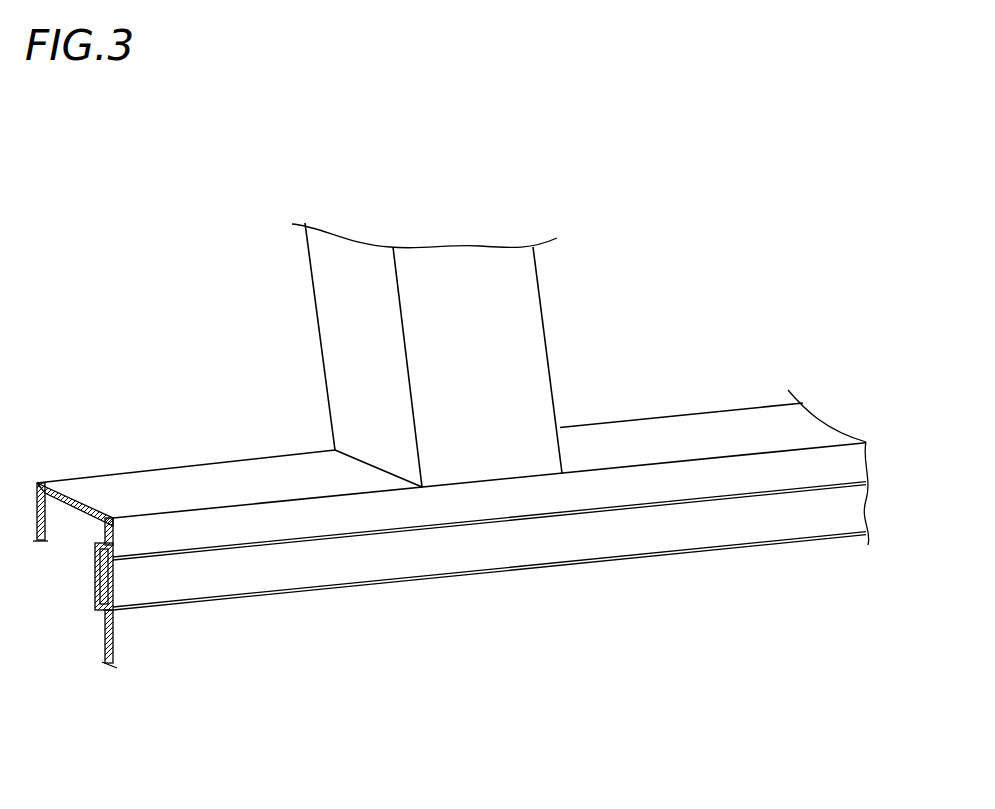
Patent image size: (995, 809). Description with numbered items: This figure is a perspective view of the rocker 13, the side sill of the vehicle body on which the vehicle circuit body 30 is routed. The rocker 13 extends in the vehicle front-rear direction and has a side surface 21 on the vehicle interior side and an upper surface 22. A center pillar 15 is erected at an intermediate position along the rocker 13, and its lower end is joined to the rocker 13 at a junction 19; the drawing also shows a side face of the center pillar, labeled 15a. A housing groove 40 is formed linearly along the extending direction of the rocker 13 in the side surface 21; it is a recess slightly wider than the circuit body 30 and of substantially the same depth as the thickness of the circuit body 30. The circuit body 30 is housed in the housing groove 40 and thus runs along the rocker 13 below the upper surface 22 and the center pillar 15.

The rocker 13 is at (100, 639).
The center pillar 15 is at (327, 287).
The column side face 15a is at (510, 338).
The junction 19 is at (502, 485).
The side surface 21 is at (197, 630).
The upper surface 22 is at (153, 481).
The vehicle circuit body 30 is at (266, 543).
The housing groove 40 is at (298, 586).